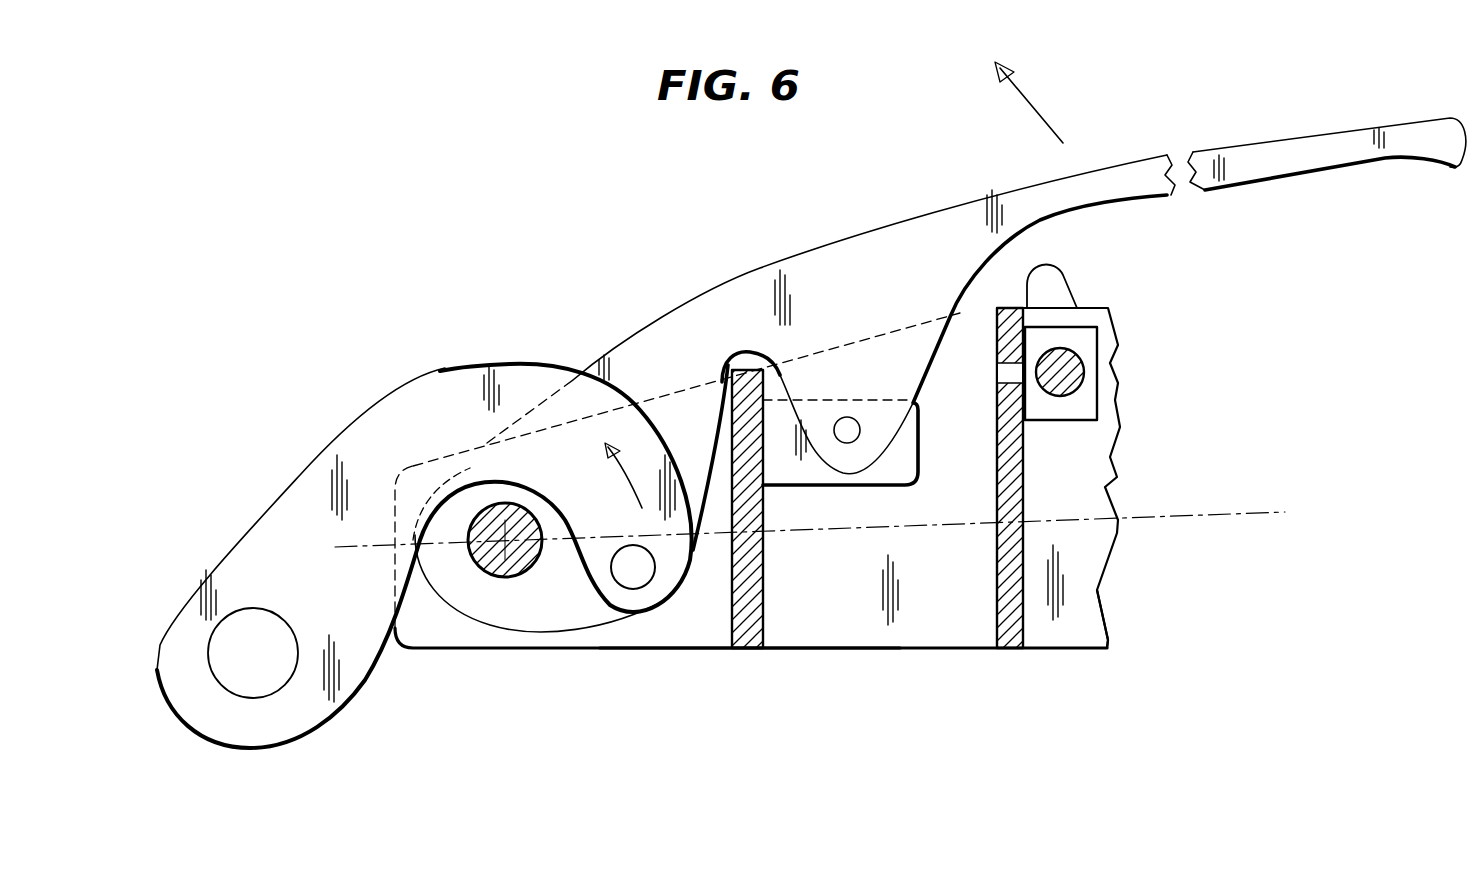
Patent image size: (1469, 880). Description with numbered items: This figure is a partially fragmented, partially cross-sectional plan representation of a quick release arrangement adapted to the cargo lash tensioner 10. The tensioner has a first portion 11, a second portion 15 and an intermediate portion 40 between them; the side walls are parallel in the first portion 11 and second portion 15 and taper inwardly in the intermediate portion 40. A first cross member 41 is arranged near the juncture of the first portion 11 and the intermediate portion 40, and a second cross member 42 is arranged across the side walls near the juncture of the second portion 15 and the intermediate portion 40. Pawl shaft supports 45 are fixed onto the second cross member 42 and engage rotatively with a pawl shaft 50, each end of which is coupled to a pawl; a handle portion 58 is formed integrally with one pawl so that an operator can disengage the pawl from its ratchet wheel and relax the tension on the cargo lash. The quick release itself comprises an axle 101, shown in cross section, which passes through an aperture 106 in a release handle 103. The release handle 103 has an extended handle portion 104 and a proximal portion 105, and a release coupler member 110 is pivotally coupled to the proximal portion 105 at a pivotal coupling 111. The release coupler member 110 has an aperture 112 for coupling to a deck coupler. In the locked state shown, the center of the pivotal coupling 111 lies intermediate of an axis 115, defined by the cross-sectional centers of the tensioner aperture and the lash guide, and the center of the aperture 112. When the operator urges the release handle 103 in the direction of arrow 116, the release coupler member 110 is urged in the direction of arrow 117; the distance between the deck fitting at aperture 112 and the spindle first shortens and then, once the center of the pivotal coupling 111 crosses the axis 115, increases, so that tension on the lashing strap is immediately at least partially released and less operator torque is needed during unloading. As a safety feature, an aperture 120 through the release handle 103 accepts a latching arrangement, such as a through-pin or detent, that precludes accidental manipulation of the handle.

The cargo lash tensioner 10 is at (824, 732).
The first portion 11 is at (565, 652).
The second portion 15 is at (1161, 620).
The intermediate portion 40 is at (957, 496).
The first cross member 41 is at (763, 599).
The second cross member 42 is at (997, 588).
The pawl shaft supports 45 is at (1062, 410).
The pawl shaft 50 is at (1075, 373).
The handle portion 58 is at (1057, 287).
The axle 101 is at (490, 573).
The release handle 103 is at (1038, 195).
The extended handle portion 104 is at (1322, 155).
The proximal portion 105 is at (675, 342).
The aperture 106 is at (497, 557).
The release coupler member 110 is at (300, 465).
The pivotal coupling 111 is at (647, 580).
The aperture 112 is at (260, 677).
The axis 115 is at (1230, 512).
The arrow 116 is at (1040, 115).
The arrow 117 is at (630, 481).
The aperture 120 is at (852, 422).